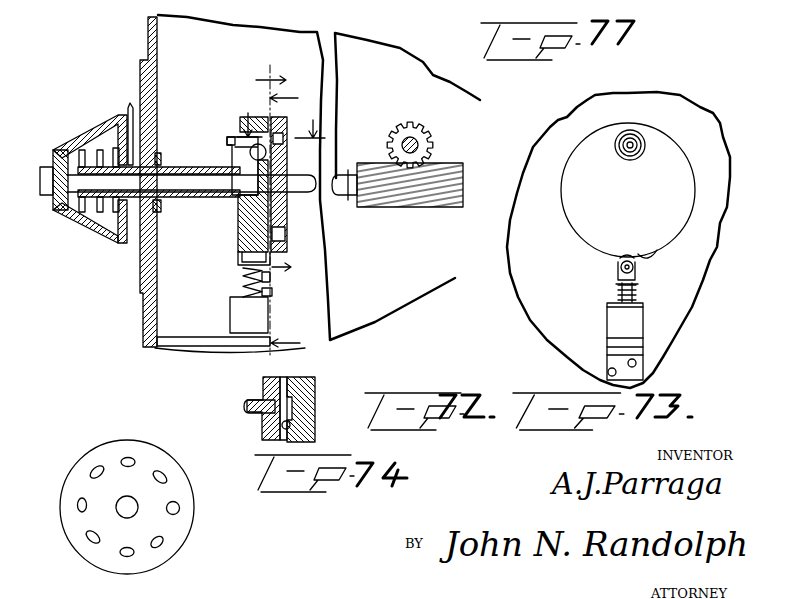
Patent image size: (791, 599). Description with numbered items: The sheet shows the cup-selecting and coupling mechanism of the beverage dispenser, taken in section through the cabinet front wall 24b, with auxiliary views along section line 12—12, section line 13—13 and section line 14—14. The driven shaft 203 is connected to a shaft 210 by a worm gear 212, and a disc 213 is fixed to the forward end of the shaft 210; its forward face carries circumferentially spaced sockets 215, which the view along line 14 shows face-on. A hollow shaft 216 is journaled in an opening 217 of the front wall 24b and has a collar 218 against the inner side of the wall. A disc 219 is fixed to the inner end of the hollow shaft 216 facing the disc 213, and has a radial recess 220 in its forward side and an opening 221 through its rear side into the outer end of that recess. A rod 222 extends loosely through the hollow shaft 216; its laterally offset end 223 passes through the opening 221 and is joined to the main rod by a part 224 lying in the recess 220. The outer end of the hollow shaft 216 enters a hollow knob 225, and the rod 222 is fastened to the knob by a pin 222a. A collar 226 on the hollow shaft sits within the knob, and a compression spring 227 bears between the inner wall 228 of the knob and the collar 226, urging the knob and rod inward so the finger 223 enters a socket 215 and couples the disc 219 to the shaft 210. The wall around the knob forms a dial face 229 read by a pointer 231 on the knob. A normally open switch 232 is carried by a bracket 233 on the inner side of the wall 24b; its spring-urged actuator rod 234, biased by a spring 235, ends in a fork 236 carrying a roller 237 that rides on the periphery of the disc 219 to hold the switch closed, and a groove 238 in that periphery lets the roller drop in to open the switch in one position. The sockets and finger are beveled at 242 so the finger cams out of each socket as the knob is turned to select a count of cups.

In FIG. 11, the section line 12— 12 is at (281, 118).
In FIG. 11, the section line 13— 13 is at (295, 221).
In FIG. 11, the section line 14— 14 is at (285, 210).
In FIG. 11, the cabinet front wall 24b is at (147, 313).
In FIG. 13, the cabinet front wall 24b is at (707, 262).
In FIG. 11, the shaft 203 is at (412, 145).
In FIG. 11, the shaft 210 is at (347, 190).
In FIG. 14, the shaft 210 is at (128, 512).
In FIG. 11, the worm gear 212 is at (437, 170).
In FIG. 11, the disc 213 is at (290, 208).
In FIG. 12, the disc 213 is at (315, 380).
In FIG. 14, the disc 213 is at (162, 452).
In FIG. 12, the sockets 215 is at (317, 405).
In FIG. 14, the sockets 215 is at (178, 510).
In FIG. 11, the hollow shaft 216 is at (200, 193).
In FIG. 11, the opening 217 is at (155, 160).
In FIG. 11, the collar 218 is at (158, 213).
In FIG. 11, the disc 219 is at (250, 237).
In FIG. 13, the disc 219 is at (596, 247).
In FIG. 11, the radial recess 220 is at (263, 163).
In FIG. 11, the opening 221 is at (278, 158).
In FIG. 12, the opening 221 is at (270, 378).
In FIG. 13, the opening 221 is at (640, 137).
In FIG. 11, the rod 222 is at (100, 217).
In FIG. 11, the pin 222a is at (58, 155).
In FIG. 11, the laterally offset end 223 is at (239, 118).
In FIG. 12, the laterally offset end 223 is at (248, 402).
In FIG. 13, the laterally offset end 223 is at (633, 153).
In FIG. 11, the part of rod 224 is at (231, 137).
In FIG. 11, the hollow knob 225 is at (73, 210).
In FIG. 11, the collar 226 is at (82, 150).
In FIG. 11, the compression spring 227 is at (107, 147).
In FIG. 11, the inner wall 228 is at (128, 243).
In FIG. 11, the dial face 229 is at (147, 72).
In FIG. 11, the pointer 231 is at (127, 112).
In FIG. 11, the electric switch 232 is at (238, 317).
In FIG. 13, the electric switch 232 is at (620, 325).
In FIG. 11, the bracket 233 is at (188, 343).
In FIG. 13, the bracket 233 is at (607, 357).
In FIG. 11, the actuator rod 234 is at (247, 288).
In FIG. 13, the actuator rod 234 is at (636, 290).
In FIG. 11, the spring 235 is at (273, 295).
In FIG. 13, the spring 235 is at (615, 288).
In FIG. 11, the fork 236 is at (270, 283).
In FIG. 11, the roller 237 is at (290, 243).
In FIG. 13, the roller 237 is at (627, 261).
In FIG. 13, the groove 238 is at (652, 252).
In FIG. 12, the bevel 242 is at (273, 402).